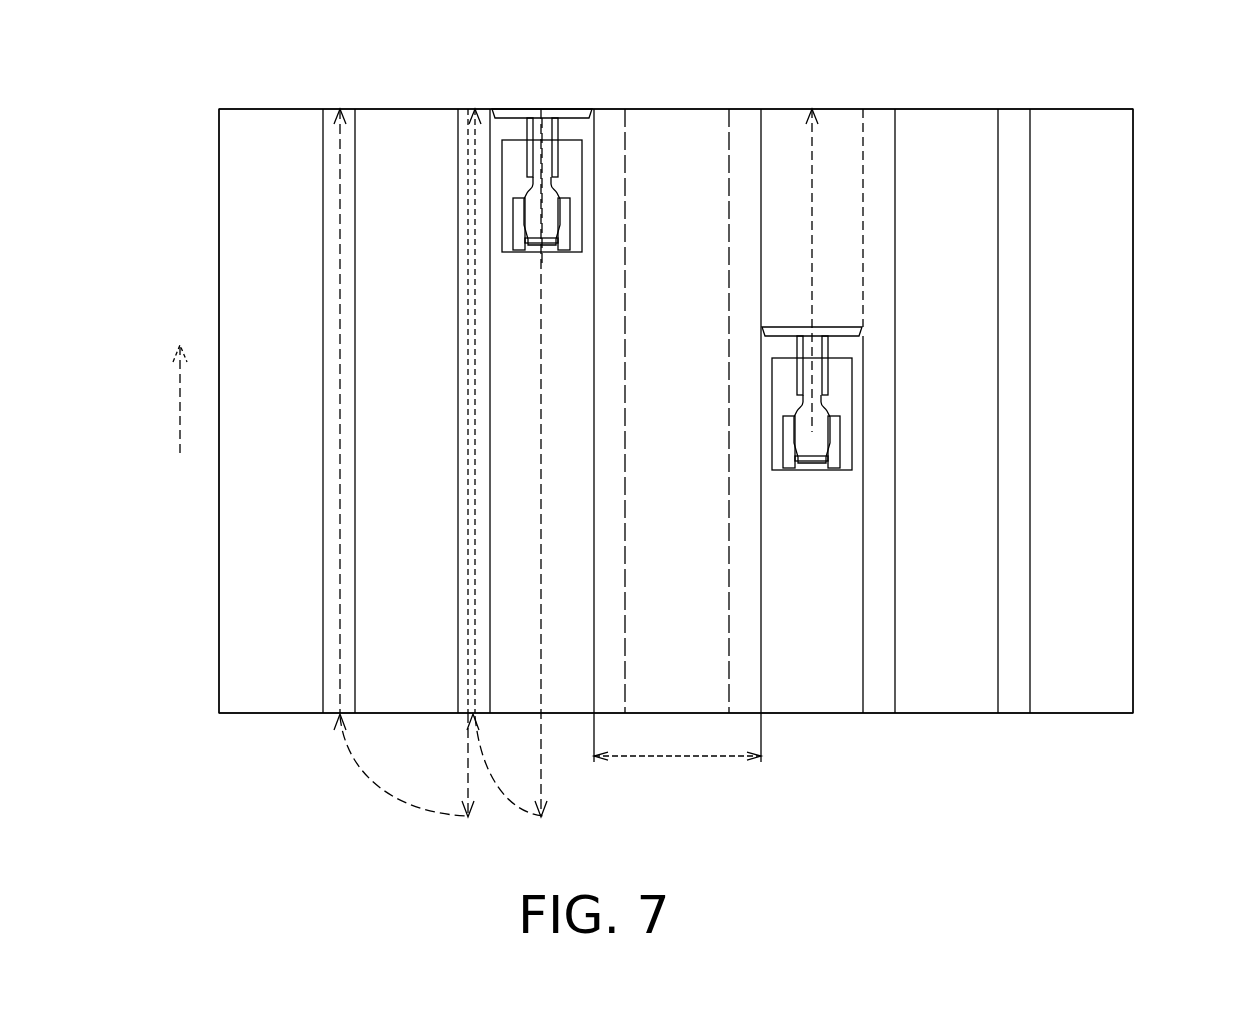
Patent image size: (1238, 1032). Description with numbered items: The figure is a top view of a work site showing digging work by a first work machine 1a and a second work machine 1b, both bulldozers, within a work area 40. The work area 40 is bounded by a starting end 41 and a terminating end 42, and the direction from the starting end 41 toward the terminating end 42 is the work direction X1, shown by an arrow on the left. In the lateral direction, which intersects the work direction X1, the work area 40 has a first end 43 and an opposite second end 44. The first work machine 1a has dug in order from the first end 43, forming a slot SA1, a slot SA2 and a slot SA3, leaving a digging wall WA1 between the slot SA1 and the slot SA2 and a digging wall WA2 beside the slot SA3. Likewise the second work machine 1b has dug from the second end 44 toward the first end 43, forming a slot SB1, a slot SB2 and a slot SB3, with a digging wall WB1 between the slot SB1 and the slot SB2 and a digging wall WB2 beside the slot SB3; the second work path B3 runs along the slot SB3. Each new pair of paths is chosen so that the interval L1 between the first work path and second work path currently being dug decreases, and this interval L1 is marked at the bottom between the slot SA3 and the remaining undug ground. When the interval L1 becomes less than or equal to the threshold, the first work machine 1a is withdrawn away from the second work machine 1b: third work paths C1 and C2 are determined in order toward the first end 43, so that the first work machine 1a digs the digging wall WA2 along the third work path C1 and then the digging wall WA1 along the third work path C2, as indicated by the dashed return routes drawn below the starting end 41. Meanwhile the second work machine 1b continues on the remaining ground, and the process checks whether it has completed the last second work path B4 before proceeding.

The work area 40 is at (197, 135).
The starting end 41 is at (272, 716).
The terminating end 42 is at (747, 109).
The first end 43 is at (219, 585).
The second end 44 is at (1133, 585).
The slot SA1 is at (282, 136).
The slot SA2 is at (408, 134).
The slot SA3 is at (567, 130).
The slot SB1 is at (1080, 135).
The slot SB2 is at (943, 135).
The slot SB3 is at (812, 703).
The digging wall WA1 is at (358, 125).
The digging wall WA2 is at (490, 130).
The digging wall WB1 is at (1032, 133).
The digging wall WB2 is at (900, 693).
The second work path B3 is at (827, 128).
The last second work path B4 is at (687, 130).
The third work path C1 is at (465, 490).
The third work path C2 is at (335, 297).
The work direction X1 is at (178, 410).
The interval L1 is at (677, 759).
The first work machine 1a is at (530, 212).
The second work machine 1b is at (830, 432).